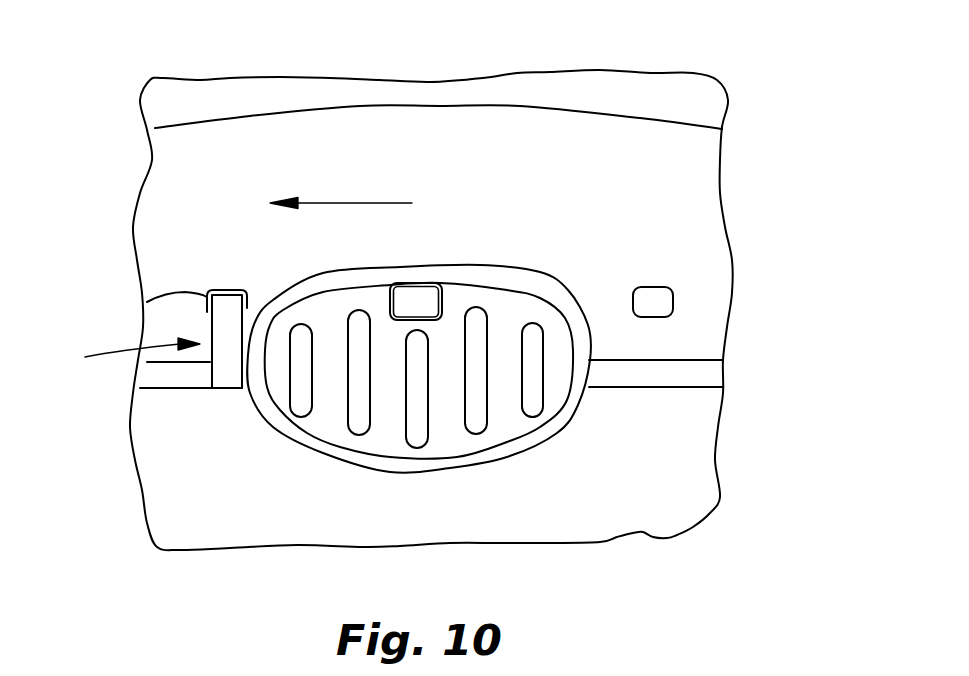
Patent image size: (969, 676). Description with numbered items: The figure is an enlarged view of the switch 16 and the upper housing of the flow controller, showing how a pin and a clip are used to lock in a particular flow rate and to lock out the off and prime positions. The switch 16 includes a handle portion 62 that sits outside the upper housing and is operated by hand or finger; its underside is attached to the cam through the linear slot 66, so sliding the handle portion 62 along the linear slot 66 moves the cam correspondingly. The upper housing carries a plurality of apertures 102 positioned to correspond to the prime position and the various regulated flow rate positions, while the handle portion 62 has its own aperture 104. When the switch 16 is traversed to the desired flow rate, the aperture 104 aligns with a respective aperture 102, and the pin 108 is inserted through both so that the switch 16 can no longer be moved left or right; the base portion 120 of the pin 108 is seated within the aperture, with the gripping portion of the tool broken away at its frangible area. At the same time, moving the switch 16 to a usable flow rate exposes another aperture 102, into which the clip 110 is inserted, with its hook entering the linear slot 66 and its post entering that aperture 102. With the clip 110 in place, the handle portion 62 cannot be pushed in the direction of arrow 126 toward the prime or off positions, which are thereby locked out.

The switch 16 is at (236, 240).
The handle portion 62 is at (517, 428).
The linear slot 66 is at (170, 382).
The aperture 102 is at (147, 302).
The aperture 104 is at (436, 297).
The pin 108 is at (415, 245).
The clip 110 is at (116, 356).
The base portion 120 is at (218, 323).
The arrow 126 is at (353, 203).